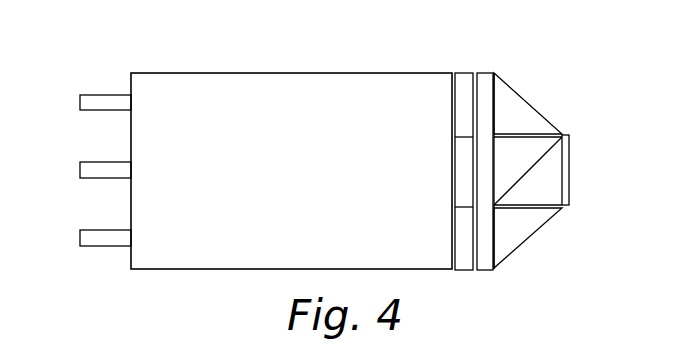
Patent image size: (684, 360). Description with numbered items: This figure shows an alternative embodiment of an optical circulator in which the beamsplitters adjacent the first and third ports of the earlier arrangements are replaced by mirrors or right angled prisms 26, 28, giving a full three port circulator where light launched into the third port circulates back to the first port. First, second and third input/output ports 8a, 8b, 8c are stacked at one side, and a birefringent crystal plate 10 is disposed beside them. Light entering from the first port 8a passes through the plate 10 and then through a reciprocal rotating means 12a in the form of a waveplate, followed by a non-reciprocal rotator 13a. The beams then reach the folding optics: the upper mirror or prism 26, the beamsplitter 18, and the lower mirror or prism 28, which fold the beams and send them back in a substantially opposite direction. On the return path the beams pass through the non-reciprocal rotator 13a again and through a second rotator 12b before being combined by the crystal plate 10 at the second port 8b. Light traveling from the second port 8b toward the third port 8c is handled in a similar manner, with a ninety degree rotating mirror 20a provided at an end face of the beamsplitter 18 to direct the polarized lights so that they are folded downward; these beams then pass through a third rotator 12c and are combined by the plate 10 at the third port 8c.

The birefringent crystal plate 10 is at (285, 72).
The first input/output port 8a is at (112, 95).
The second input/output port 8b is at (112, 162).
The third input/output port 8c is at (112, 230).
The reciprocal rotating means 12a is at (454, 72).
The second rotator 12b is at (464, 172).
The third rotator 12c is at (461, 270).
The non-reciprocal rotator 13a is at (491, 270).
The mirror or right angled prism 26 is at (528, 99).
The 90 degree rotating mirror 20a is at (570, 143).
The beamsplitter 18 is at (563, 207).
The mirror or right angled prism 28 is at (540, 228).